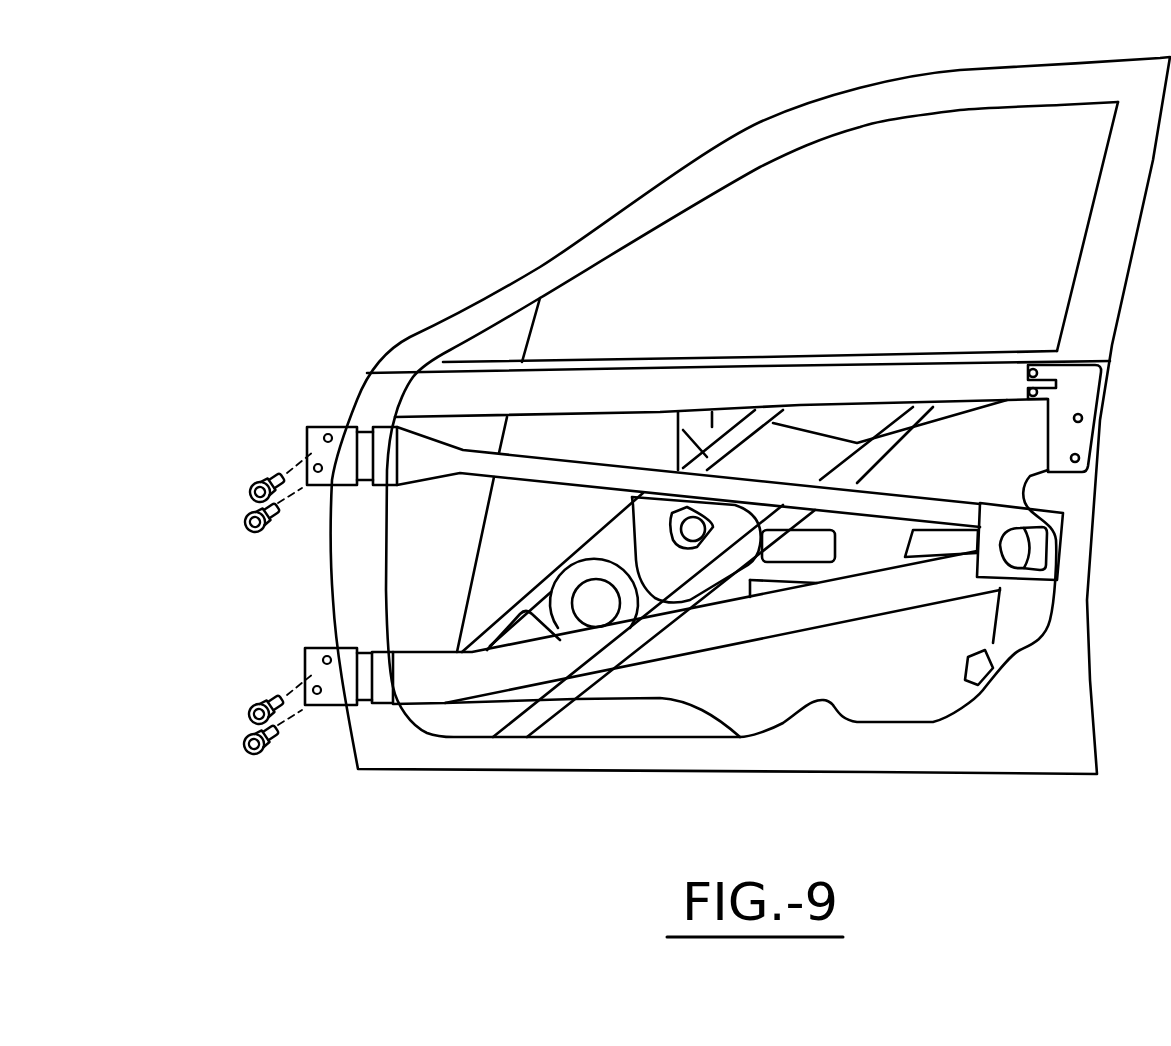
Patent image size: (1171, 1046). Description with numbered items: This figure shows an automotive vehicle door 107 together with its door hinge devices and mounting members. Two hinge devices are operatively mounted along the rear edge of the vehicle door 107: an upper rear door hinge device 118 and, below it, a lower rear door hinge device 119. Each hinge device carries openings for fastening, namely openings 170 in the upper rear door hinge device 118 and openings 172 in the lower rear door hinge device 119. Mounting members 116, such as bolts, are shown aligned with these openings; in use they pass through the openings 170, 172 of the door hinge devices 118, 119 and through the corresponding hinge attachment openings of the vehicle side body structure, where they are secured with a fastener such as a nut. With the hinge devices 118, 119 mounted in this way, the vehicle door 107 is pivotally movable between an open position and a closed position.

The vehicle door 107 is at (578, 780).
The mounting members 116 is at (250, 492).
The upper rear door hinge device 118 is at (308, 447).
The lower rear door hinge device 119 is at (332, 705).
The openings 170 is at (328, 436).
The openings 172 is at (327, 658).